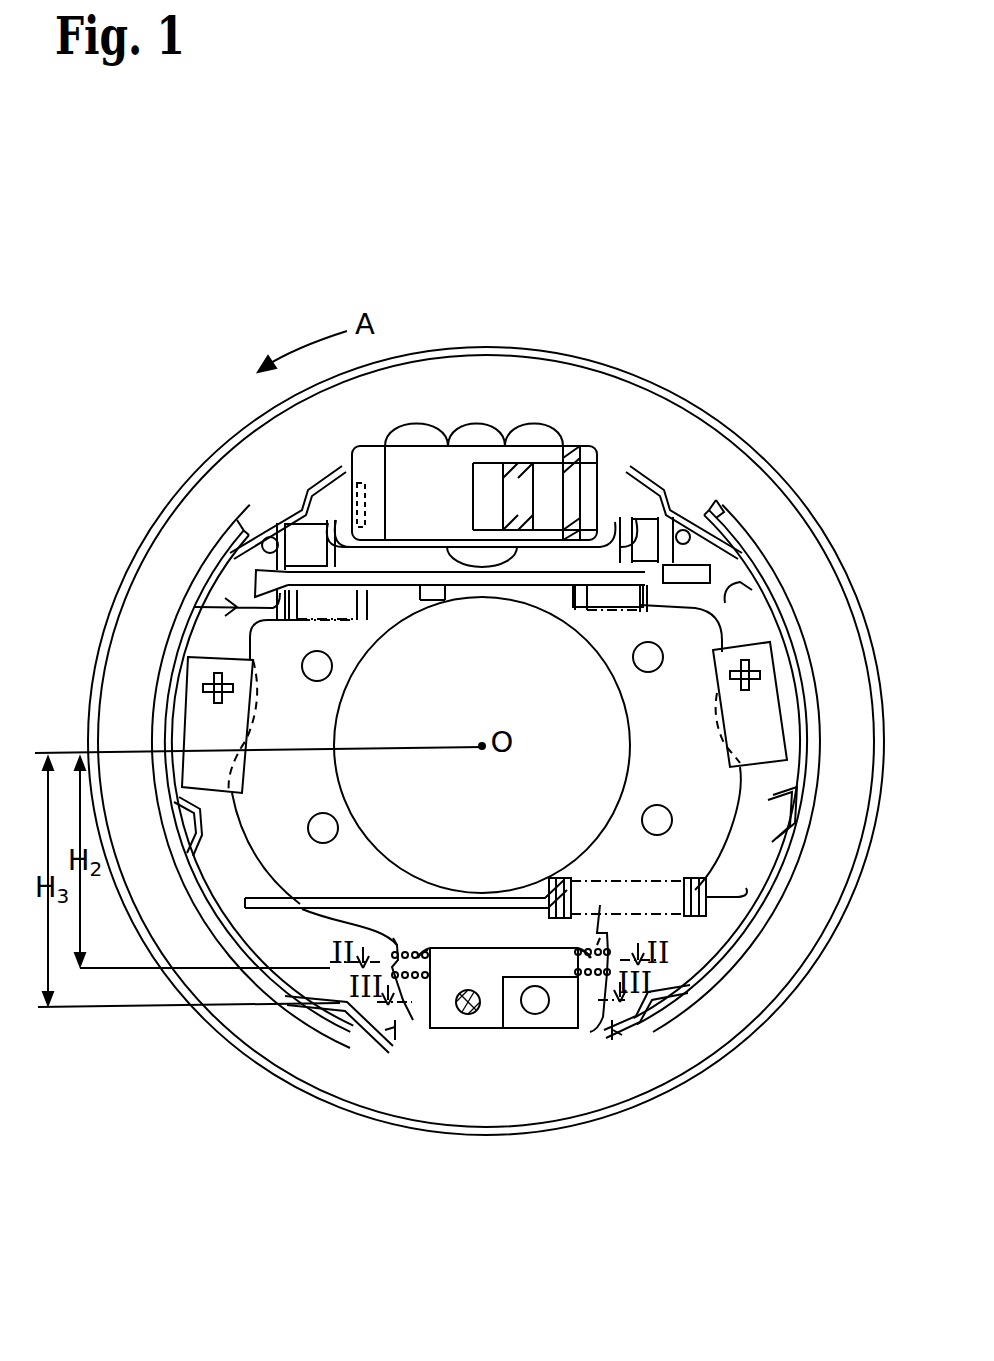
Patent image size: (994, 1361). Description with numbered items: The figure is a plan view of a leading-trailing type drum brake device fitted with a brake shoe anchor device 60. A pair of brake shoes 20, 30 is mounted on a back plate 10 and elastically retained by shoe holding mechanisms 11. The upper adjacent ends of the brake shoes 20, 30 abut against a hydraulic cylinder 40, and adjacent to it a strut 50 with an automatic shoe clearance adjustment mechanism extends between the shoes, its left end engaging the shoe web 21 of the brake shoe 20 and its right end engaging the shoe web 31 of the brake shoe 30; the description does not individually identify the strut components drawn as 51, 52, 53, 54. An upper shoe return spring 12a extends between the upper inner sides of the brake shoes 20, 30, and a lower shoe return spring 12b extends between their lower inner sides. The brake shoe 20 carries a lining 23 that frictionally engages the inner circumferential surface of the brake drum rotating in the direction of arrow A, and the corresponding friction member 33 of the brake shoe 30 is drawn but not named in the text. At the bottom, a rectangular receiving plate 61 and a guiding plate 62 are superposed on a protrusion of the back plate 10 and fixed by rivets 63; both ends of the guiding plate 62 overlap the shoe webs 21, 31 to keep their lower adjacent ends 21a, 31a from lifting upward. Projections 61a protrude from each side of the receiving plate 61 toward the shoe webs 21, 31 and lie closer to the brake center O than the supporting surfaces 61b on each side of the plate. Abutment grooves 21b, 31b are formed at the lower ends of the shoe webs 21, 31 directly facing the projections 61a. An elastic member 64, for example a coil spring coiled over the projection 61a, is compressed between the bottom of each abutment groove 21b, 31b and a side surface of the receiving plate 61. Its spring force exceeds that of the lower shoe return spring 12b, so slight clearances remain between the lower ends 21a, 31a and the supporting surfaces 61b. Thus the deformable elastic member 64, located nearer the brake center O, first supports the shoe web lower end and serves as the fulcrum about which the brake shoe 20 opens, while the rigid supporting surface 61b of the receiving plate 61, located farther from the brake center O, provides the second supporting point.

The back plate 10 is at (676, 420).
The shoe holding mechanism 11 is at (180, 705).
The shoe return spring 12a is at (738, 518).
The shoe return spring 12b is at (560, 895).
The brake shoe 20 is at (235, 749).
The shoe web 21 is at (197, 637).
The lower adjacent end 21a is at (397, 1030).
The abutment groove 21b is at (397, 940).
The lining 23 is at (190, 650).
The brake shoe 30 is at (732, 723).
The shoe web 31 is at (745, 525).
The lower adjacent end 31a is at (620, 1032).
The abutment groove 31b is at (600, 940).
The shoe rim / lining of second brake shoe 33 is at (800, 615).
The hydraulic cylinder 40 is at (445, 442).
The strut 50 is at (482, 631).
The strut member 51 is at (430, 590).
The strut member 52 is at (600, 590).
The strut member 53 is at (372, 593).
The strut member 54 is at (585, 627).
The brake shoe anchor device 60 is at (544, 1026).
The rectangular receiving plate 61 is at (502, 958).
The projection 61a is at (427, 967).
The supporting surface 61b is at (500, 1030).
The guiding plate 62 is at (558, 1022).
The rivet 63 is at (470, 1016).
The elastic member 64 is at (410, 950).